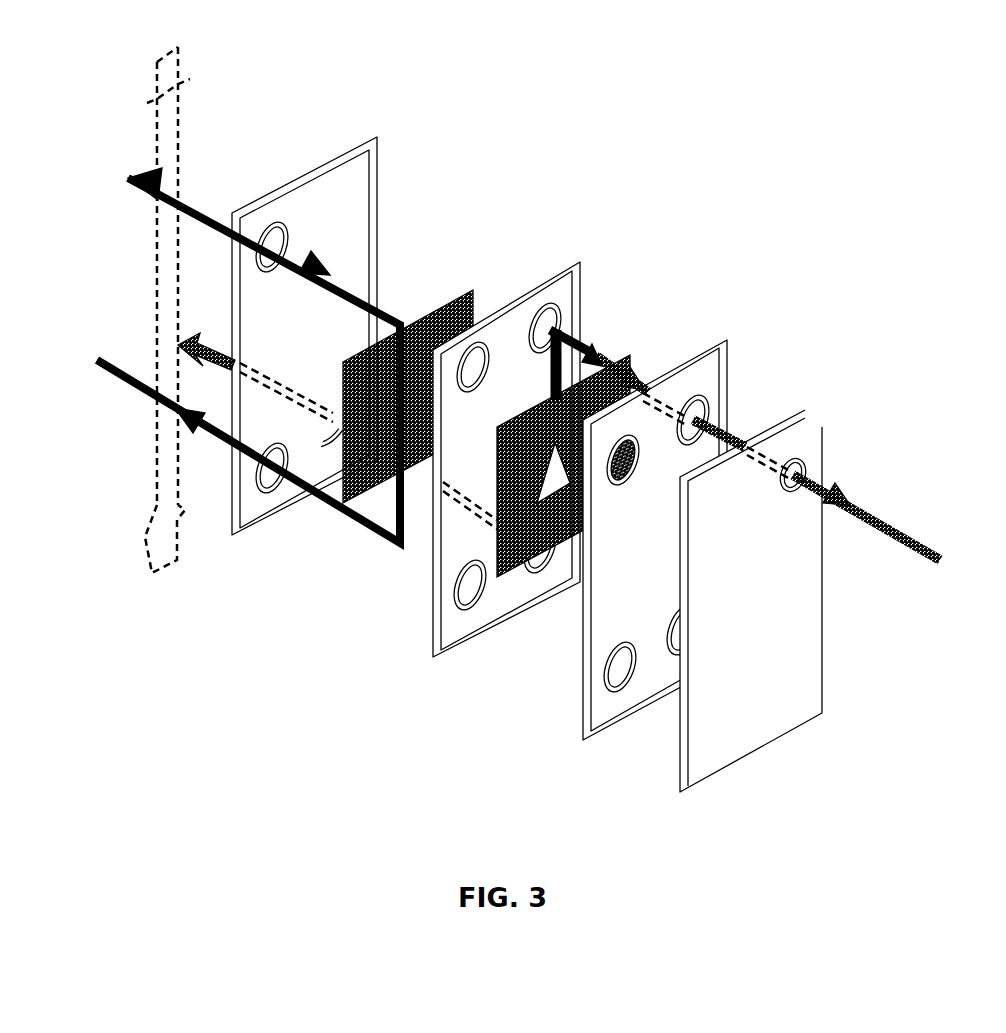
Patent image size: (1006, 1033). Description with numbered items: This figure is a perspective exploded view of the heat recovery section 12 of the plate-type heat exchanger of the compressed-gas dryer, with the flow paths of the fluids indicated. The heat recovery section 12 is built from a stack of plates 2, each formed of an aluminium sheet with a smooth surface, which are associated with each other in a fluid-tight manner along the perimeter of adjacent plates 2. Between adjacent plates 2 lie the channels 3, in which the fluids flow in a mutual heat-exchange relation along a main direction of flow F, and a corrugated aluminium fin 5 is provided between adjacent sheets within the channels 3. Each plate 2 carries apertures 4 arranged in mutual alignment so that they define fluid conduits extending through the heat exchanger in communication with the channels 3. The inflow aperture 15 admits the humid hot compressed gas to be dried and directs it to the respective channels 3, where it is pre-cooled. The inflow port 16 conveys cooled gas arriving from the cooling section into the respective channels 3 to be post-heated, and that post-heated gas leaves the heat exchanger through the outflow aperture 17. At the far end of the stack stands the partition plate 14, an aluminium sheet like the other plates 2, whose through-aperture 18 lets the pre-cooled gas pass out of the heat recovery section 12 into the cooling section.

The plate 2 is at (337, 190).
The channel 3 is at (365, 568).
The aperture 4 is at (470, 576).
The corrugated aluminium fin 5 is at (437, 308).
The heat recovery section 12 is at (680, 196).
The partition plate 14 is at (812, 647).
The inflow aperture 15 is at (332, 402).
The inflow port 16 is at (272, 222).
The outflow aperture 17 is at (273, 485).
The through-aperture 18 is at (807, 457).
The main direction of flow F is at (157, 250).